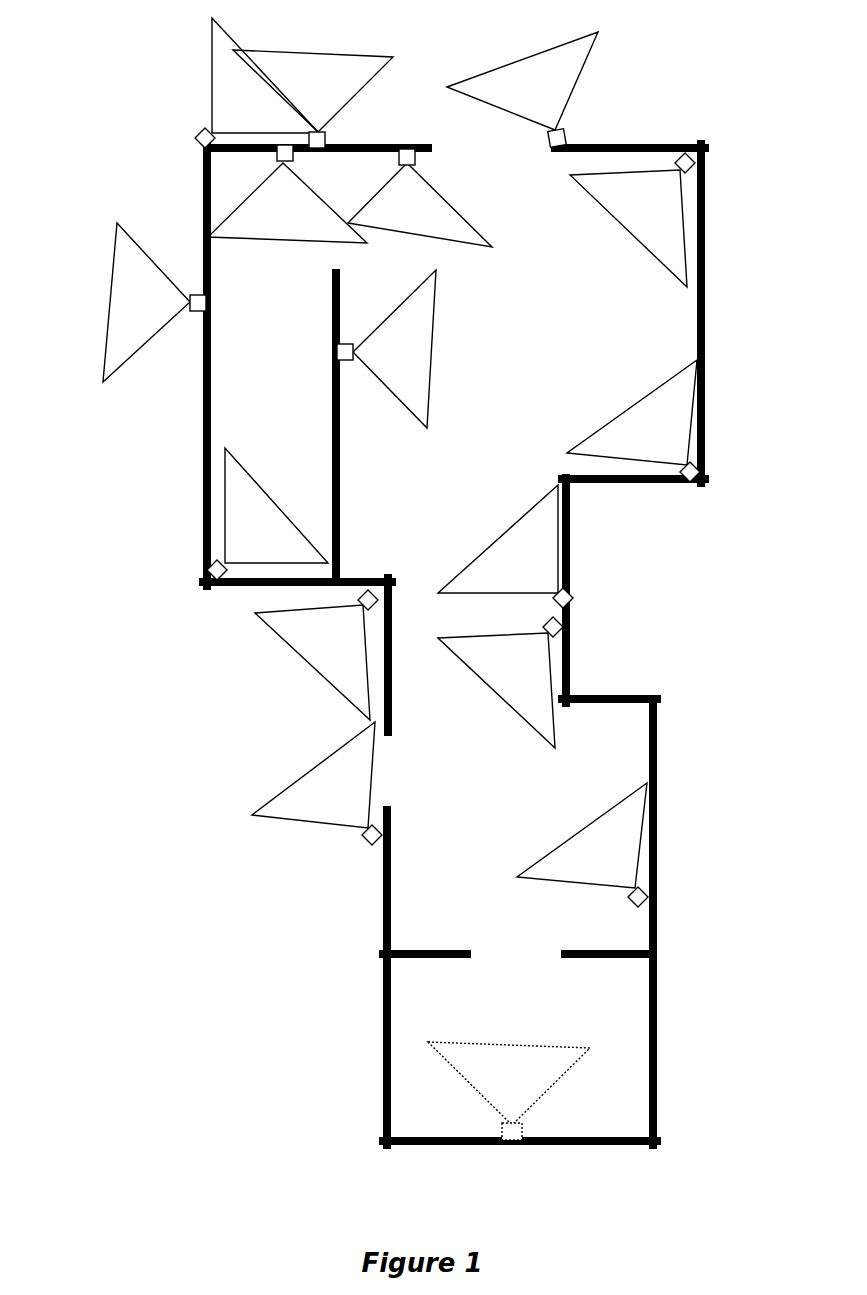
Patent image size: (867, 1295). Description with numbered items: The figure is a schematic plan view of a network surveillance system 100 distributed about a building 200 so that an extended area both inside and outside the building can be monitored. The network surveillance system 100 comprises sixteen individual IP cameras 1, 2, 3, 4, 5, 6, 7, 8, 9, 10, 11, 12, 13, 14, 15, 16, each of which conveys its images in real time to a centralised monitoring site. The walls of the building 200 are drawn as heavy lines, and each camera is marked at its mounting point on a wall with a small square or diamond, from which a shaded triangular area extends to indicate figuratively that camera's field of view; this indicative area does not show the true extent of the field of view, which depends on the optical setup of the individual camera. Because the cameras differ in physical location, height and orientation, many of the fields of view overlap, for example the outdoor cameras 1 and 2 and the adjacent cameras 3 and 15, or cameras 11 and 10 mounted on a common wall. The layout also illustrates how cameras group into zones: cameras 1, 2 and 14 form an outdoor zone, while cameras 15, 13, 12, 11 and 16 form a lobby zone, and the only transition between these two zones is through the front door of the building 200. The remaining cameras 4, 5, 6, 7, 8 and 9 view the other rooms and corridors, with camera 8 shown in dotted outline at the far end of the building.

The network surveillance system 100 is at (168, 84).
The building 200 is at (705, 257).
The IP camera 1 is at (257, 83).
The IP camera 2 is at (313, 99).
The IP camera 3 is at (287, 194).
The IP camera 4 is at (154, 302).
The IP camera 5 is at (267, 514).
The IP camera 6 is at (316, 655).
The IP camera 7 is at (317, 783).
The IP camera 8 is at (509, 1091).
The IP camera 9 is at (582, 845).
The IP camera 10 is at (500, 682).
The IP camera 11 is at (505, 546).
The IP camera 12 is at (633, 421).
The IP camera 13 is at (632, 220).
The IP camera 14 is at (522, 89).
The IP camera 15 is at (420, 198).
The IP camera 16 is at (386, 349).